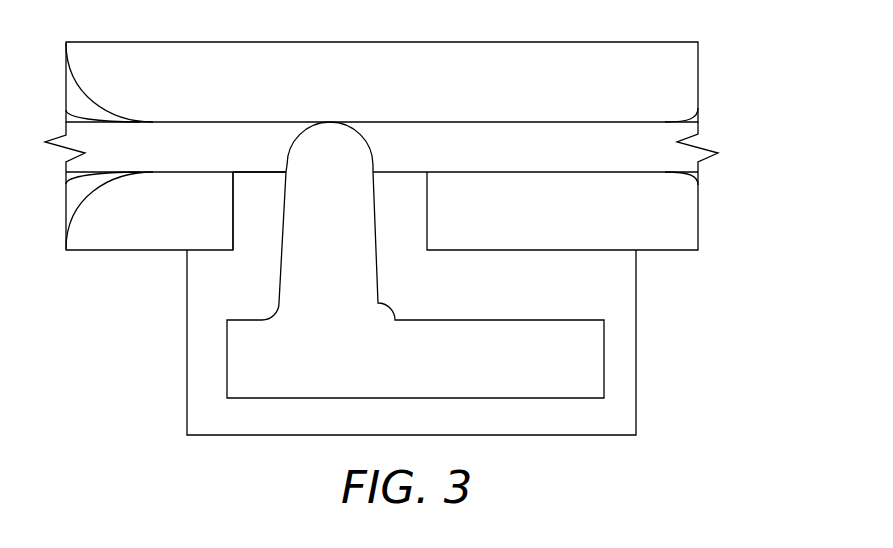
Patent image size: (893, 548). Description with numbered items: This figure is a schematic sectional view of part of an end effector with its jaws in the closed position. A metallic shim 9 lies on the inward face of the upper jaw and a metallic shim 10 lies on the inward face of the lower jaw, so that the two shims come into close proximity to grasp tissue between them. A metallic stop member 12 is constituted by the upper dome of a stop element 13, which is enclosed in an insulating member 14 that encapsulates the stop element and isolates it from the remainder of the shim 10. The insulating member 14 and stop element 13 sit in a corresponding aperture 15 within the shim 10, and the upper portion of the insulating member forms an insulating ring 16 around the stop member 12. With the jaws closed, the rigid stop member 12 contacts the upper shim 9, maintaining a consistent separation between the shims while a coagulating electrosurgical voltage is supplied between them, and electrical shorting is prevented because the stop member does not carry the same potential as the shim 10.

The metallic shim 9 is at (630, 50).
The metallic shim 10 is at (683, 209).
The metallic stop member 12 is at (328, 137).
The stop element 13 is at (240, 358).
The insulating member 14 is at (621, 286).
The aperture 15 is at (427, 172).
The insulating ring 16 is at (250, 206).